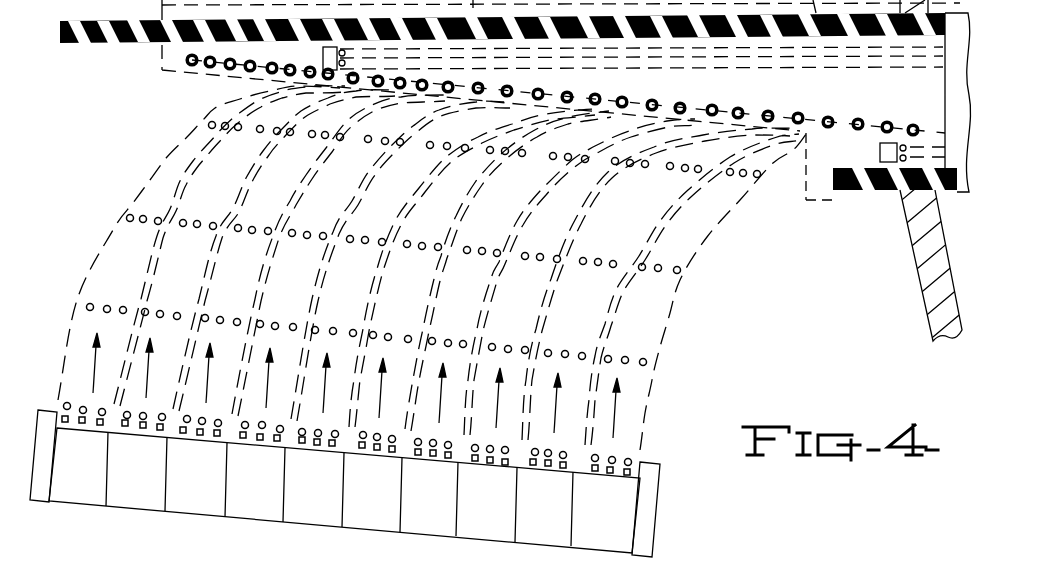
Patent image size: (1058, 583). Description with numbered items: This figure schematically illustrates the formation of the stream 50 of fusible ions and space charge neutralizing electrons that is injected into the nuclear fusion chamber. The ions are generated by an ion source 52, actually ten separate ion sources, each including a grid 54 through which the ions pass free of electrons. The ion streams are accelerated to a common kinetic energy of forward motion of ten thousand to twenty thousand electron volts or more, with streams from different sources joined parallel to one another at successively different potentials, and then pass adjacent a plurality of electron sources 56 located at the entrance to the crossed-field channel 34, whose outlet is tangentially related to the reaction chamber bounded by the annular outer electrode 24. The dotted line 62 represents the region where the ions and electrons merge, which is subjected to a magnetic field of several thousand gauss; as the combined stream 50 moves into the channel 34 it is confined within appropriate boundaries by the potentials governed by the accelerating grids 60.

The outer electrode 24 is at (937, 306).
The channel 34 is at (855, 191).
The stream 50 is at (813, 102).
The ion source 52 is at (623, 516).
The grid 54 is at (245, 456).
The electron sources 56 is at (680, 107).
The accelerating grids 60 is at (212, 122).
The dotted line 62 is at (799, 175).